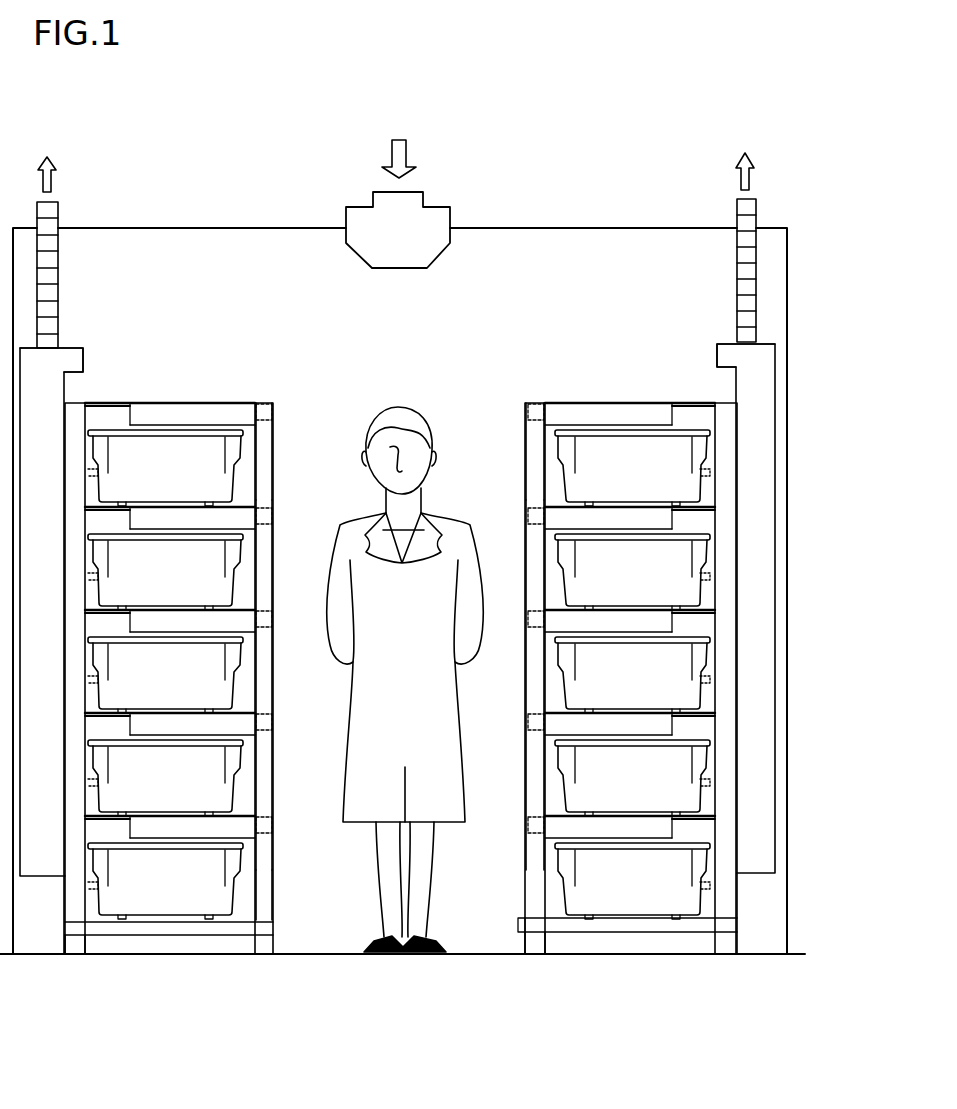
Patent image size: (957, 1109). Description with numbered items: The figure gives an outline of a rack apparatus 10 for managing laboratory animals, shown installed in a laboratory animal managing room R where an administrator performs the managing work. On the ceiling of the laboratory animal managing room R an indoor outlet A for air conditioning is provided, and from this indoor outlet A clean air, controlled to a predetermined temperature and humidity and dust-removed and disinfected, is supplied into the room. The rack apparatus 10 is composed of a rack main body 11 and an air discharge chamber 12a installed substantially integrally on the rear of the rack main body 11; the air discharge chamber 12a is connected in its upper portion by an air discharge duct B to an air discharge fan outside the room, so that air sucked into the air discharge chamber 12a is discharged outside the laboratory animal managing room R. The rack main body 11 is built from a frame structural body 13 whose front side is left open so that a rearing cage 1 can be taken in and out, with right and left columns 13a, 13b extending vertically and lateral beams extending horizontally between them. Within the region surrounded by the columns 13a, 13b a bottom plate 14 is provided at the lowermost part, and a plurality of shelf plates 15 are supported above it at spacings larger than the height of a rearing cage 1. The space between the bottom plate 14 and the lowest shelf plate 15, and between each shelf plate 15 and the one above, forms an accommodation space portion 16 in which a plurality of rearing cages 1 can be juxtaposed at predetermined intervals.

The rearing cage 1 is at (251, 450).
The rack apparatus 10 is at (285, 367).
The rack main body 11 is at (283, 411).
The air discharge chamber 12a is at (63, 355).
The frame structural body 13 is at (265, 560).
The column 13a is at (266, 888).
The column 13b is at (74, 946).
The bottom plate 14 is at (174, 925).
The shelf plate 15 is at (243, 507).
The accommodation space portion 16 is at (248, 474).
The indoor outlet A is at (437, 219).
The air discharge duct B is at (60, 212).
The laboratory animal managing room R is at (291, 170).